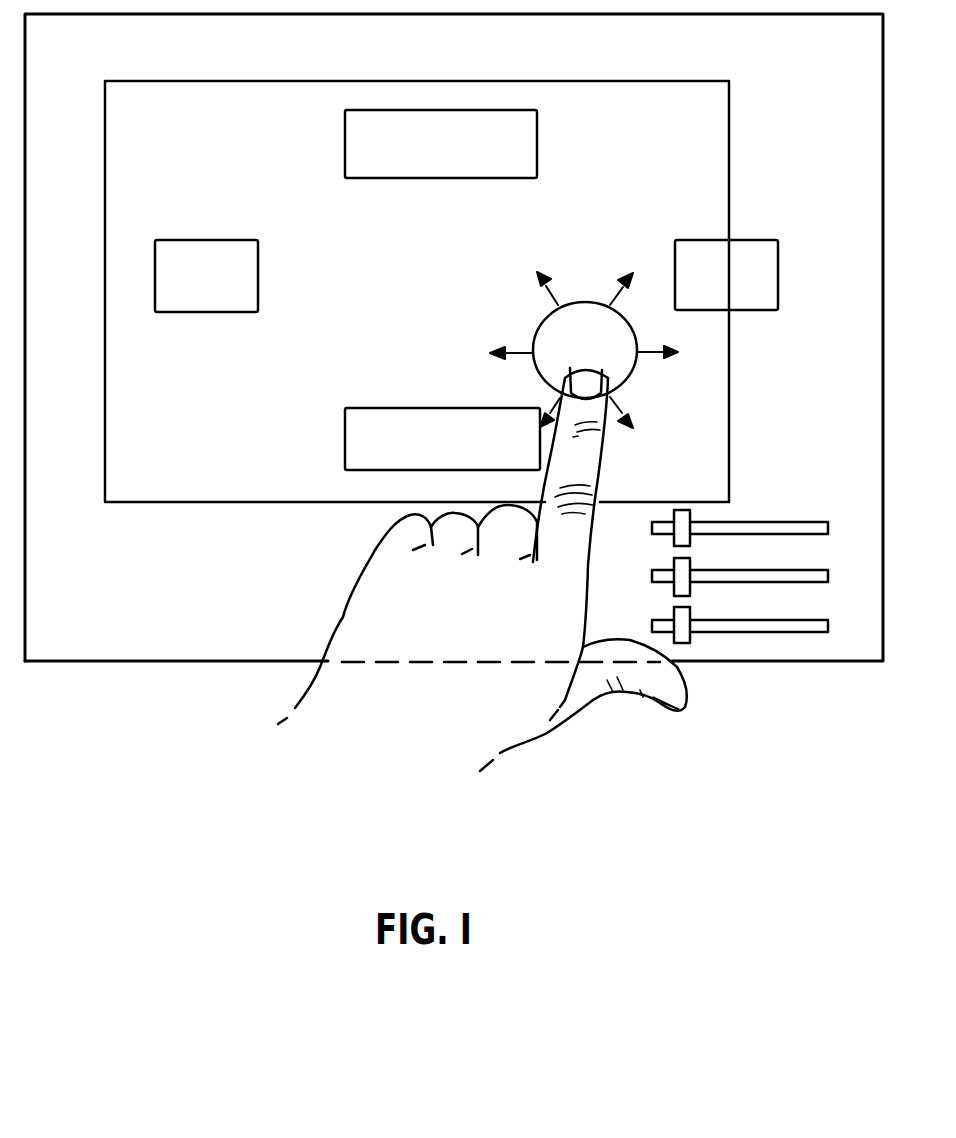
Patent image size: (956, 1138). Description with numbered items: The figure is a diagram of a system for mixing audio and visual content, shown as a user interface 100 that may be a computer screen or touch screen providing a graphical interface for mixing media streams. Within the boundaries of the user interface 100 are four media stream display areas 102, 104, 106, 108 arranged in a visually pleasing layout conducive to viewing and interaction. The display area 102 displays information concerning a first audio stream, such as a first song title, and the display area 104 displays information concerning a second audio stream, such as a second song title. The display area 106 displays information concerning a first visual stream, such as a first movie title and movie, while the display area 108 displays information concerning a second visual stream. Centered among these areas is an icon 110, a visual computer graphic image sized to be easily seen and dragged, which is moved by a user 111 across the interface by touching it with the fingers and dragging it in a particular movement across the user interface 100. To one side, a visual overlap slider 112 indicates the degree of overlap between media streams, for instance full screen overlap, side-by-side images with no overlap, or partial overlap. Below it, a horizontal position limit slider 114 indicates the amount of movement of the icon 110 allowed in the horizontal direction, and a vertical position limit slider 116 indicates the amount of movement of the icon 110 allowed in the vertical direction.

The user interface 100 is at (729, 380).
The media stream display area 102 is at (537, 145).
The media stream display area 104 is at (345, 437).
The media stream display area 106 is at (215, 312).
The media stream display area 108 is at (778, 275).
The icon 110 is at (533, 333).
The user 111 is at (512, 732).
The visual overlap slider 112 is at (755, 522).
The horizontal position limit slider 114 is at (785, 572).
The vertical position limit slider 116 is at (778, 632).